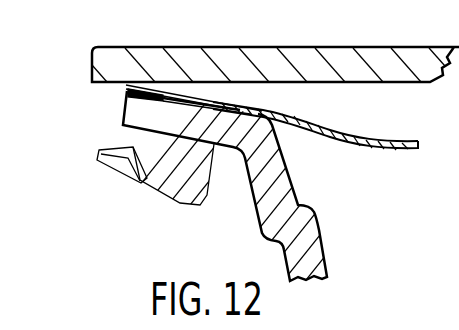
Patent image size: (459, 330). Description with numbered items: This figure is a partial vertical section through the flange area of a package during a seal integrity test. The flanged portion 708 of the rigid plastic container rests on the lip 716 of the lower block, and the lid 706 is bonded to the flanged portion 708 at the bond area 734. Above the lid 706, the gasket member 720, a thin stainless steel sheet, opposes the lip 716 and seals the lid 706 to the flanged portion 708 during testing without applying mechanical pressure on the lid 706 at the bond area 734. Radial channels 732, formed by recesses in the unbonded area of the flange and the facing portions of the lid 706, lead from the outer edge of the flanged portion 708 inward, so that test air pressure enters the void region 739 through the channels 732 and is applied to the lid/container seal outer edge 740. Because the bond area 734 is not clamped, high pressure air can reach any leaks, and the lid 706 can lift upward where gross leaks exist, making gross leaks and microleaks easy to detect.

The gasket member 720 is at (98, 47).
The lid/container seal outer edge 740 is at (201, 107).
The bond area 734 is at (244, 107).
The radial channels 732 is at (156, 107).
The lid 706 is at (326, 115).
The flanged portion 708 is at (124, 128).
The void region 739 is at (158, 107).
The lip 716 is at (133, 148).